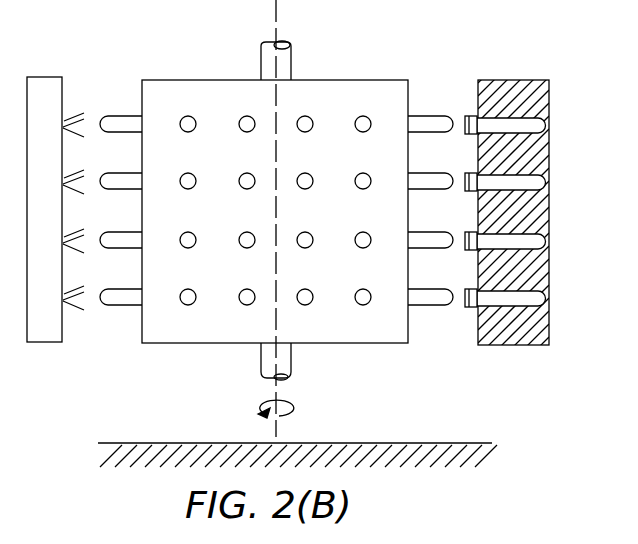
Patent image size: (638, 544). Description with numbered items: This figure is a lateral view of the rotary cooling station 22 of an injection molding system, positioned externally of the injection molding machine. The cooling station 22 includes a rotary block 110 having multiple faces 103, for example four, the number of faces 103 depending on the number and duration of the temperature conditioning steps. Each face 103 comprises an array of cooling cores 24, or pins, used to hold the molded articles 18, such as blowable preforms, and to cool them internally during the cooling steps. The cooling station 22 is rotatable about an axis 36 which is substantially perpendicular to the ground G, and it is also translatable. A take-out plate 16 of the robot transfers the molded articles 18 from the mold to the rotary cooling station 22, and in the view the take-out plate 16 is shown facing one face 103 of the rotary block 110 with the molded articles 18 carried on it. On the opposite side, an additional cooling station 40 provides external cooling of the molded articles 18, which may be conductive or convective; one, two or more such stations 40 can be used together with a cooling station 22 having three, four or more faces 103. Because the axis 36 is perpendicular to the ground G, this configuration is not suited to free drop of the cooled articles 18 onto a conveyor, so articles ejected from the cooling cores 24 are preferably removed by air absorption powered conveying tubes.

The rotary cooling station 22 is at (254, 199).
The faces 103 is at (160, 327).
The rotary block 110 is at (234, 111).
The axis 36 is at (276, 16).
The additional cooling stations 40 is at (50, 77).
The cooling cores 24 is at (435, 116).
The take-out plate 16 is at (525, 88).
The molded articles 18 is at (470, 308).
The ground G is at (178, 443).